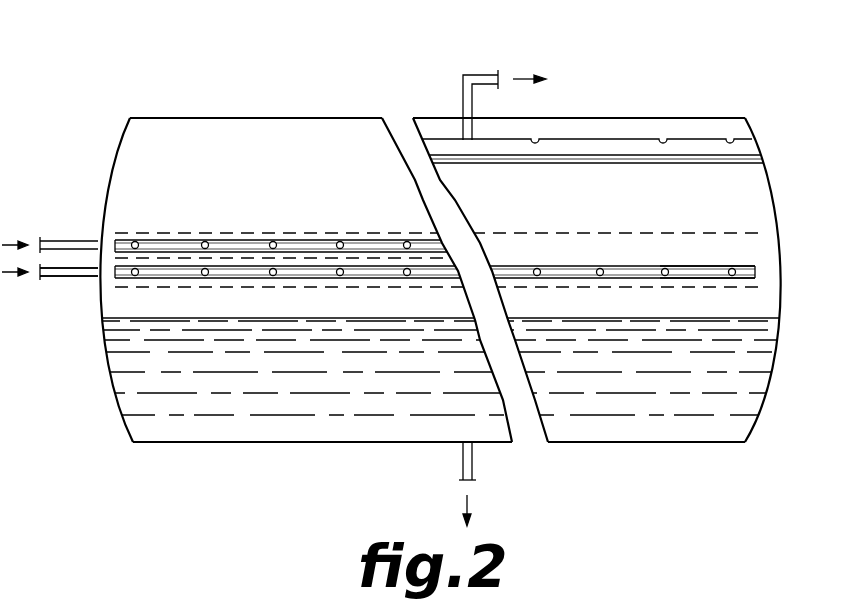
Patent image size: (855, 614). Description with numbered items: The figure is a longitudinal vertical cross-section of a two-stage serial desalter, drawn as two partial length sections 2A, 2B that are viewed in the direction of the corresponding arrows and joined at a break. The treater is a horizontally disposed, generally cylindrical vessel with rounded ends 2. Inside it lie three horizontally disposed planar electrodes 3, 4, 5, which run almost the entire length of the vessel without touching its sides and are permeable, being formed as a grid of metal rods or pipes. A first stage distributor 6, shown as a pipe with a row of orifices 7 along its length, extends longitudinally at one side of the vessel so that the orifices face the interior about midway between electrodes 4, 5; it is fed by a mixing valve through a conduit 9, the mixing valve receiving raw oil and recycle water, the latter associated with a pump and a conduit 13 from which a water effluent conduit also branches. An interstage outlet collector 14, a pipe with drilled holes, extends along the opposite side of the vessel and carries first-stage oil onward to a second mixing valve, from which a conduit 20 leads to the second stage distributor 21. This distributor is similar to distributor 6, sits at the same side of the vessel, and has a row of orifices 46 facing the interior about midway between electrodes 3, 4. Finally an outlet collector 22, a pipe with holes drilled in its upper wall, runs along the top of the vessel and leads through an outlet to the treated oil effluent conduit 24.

The rounded ends 2 is at (773, 188).
The partial length section 2A is at (250, 112).
The partial length section 2B is at (629, 112).
The electrode 3 is at (620, 233).
The electrode 4 is at (620, 266).
The electrode 5 is at (620, 288).
The distributor 6 is at (188, 288).
The orifices 7 is at (273, 276).
The conduit 9 is at (58, 277).
The conduit 13 is at (472, 460).
The interstage outlet collector 14 is at (700, 279).
The conduit 20 is at (60, 240).
The second stage distributor 21 is at (185, 240).
The outlet collector 22 is at (688, 166).
The treated oil effluent conduit 24 is at (478, 74).
The orifices 46 is at (273, 241).